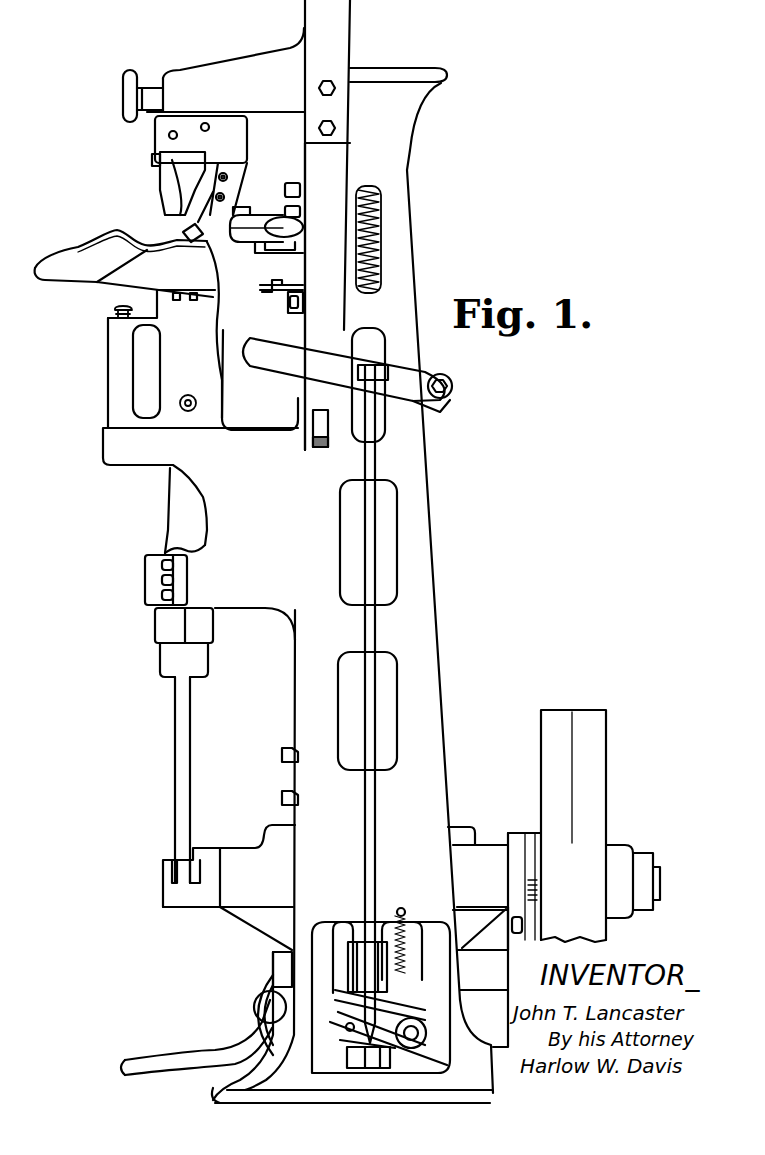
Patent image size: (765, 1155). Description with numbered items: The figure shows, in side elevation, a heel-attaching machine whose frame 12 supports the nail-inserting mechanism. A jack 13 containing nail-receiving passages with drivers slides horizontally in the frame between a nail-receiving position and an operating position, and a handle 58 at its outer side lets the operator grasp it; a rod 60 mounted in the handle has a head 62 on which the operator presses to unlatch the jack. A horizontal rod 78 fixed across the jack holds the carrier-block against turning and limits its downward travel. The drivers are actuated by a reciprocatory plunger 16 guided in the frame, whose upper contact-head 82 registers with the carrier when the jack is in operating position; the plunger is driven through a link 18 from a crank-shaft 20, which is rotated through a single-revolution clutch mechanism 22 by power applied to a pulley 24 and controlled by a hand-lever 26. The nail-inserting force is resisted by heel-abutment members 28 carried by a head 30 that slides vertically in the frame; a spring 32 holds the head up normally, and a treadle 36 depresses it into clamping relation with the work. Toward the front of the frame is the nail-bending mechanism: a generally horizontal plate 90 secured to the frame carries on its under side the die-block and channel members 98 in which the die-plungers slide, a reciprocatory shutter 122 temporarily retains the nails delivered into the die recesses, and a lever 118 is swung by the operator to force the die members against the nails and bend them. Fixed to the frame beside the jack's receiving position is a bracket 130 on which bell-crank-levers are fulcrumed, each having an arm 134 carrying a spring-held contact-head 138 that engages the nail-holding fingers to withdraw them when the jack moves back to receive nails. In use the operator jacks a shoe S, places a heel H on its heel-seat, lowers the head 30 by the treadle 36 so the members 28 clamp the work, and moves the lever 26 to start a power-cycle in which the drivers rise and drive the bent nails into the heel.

The frame 12 is at (430, 510).
The jack 13 is at (218, 408).
The reciprocatory plunger 16 is at (158, 632).
The link 18 is at (178, 765).
The crank-shaft 20 is at (660, 880).
The single-revolution clutch mechanism 22 is at (533, 840).
The pulley 24 is at (594, 708).
The hand-lever 26 is at (260, 362).
The heel-abutment members 28 is at (190, 233).
The head 30 is at (232, 70).
The spring 32 is at (382, 240).
The treadle 36 is at (165, 1057).
The handle 58 is at (108, 373).
The rod 60 is at (117, 317).
The head 62 is at (115, 307).
The horizontal rod 78 is at (189, 395).
The upper contact-head 82 is at (173, 480).
The horizontal plate 90 is at (262, 215).
The channel members 98 is at (282, 253).
The lever 118 is at (293, 225).
The reciprocatory shutter 122 is at (263, 252).
The bracket 130 is at (303, 305).
The arm 134 is at (297, 286).
The contact-head 138 is at (268, 291).
The shoe S is at (75, 253).
The heel H is at (175, 234).